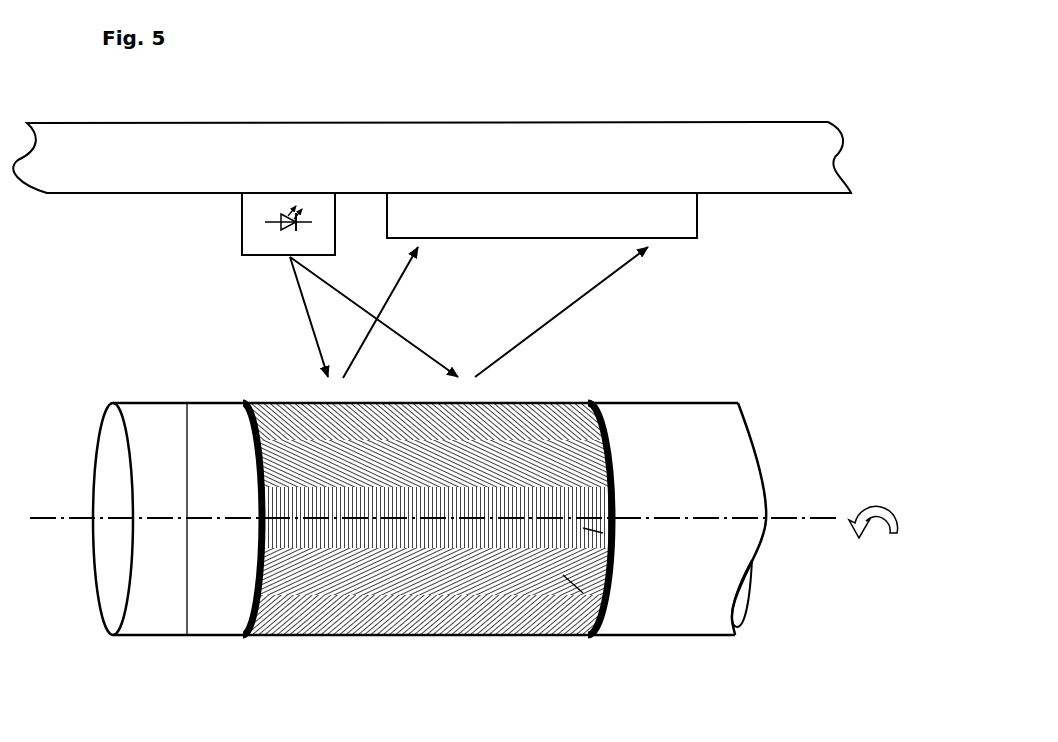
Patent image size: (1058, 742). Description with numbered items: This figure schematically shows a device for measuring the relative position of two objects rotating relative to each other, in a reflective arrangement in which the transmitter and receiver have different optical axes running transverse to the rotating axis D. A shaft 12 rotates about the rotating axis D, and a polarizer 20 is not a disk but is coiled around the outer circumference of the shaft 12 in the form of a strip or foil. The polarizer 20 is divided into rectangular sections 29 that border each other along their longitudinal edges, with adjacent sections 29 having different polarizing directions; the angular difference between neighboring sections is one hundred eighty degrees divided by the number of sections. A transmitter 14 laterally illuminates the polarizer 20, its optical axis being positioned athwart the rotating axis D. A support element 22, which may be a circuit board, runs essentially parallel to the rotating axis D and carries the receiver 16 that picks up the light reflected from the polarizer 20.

The shaft 12 is at (722, 442).
The transmitter 14 is at (265, 200).
The receiver 16 is at (673, 213).
The polarizer 20 is at (307, 620).
The support element 22 is at (135, 138).
The rectangular sections 29 is at (563, 400).
The rotating axis D is at (800, 517).